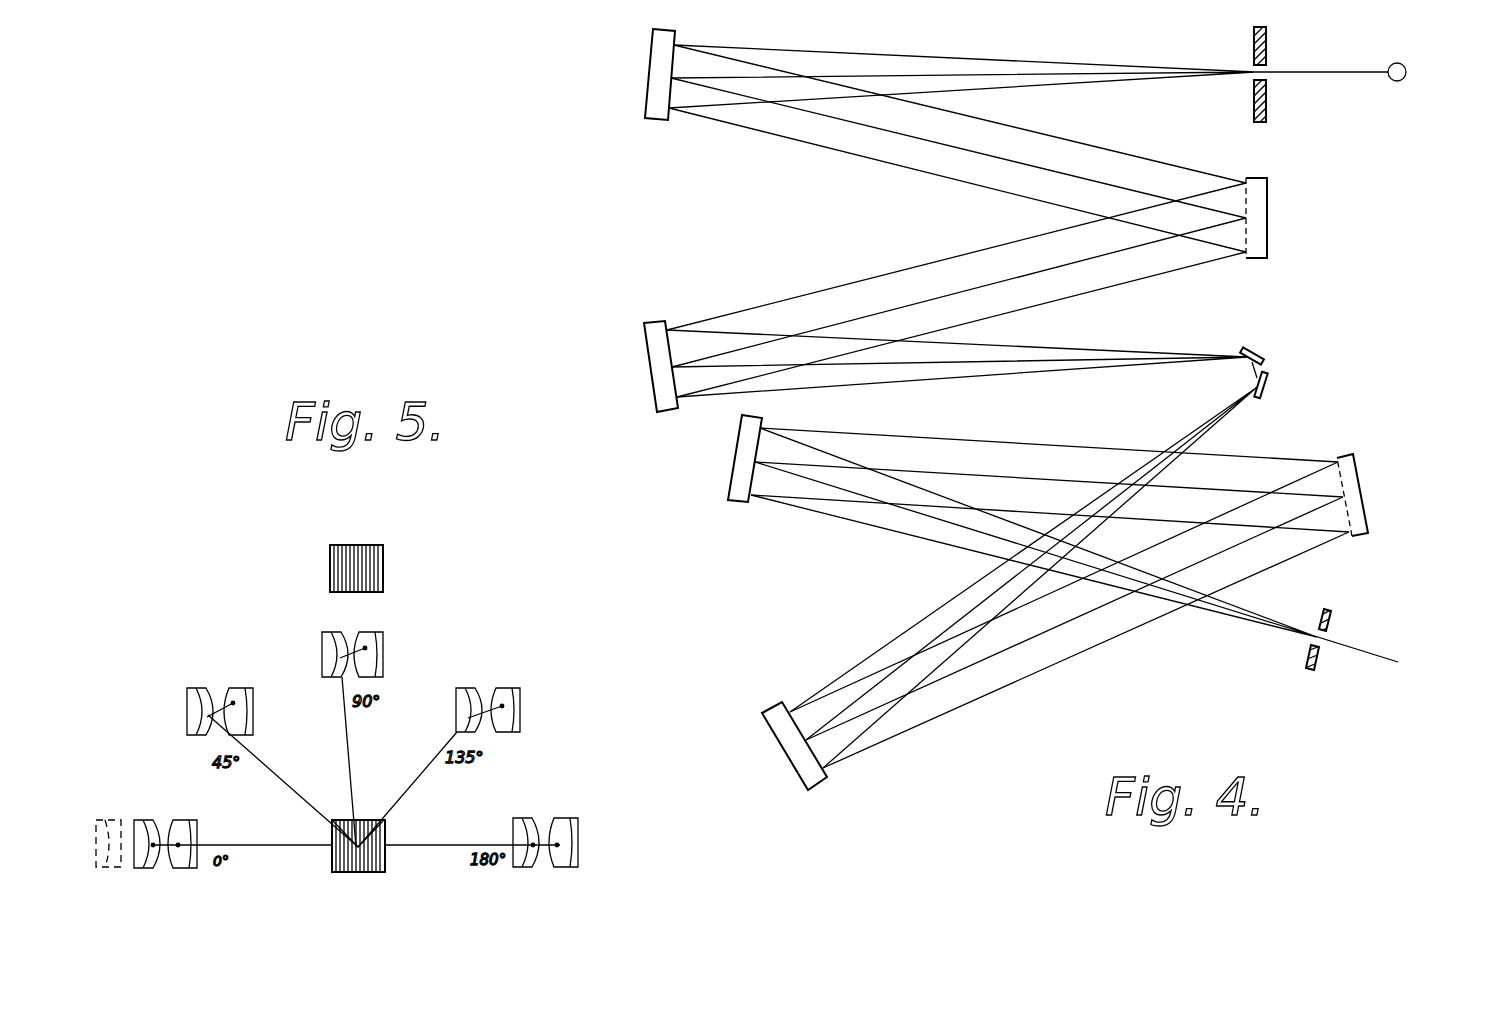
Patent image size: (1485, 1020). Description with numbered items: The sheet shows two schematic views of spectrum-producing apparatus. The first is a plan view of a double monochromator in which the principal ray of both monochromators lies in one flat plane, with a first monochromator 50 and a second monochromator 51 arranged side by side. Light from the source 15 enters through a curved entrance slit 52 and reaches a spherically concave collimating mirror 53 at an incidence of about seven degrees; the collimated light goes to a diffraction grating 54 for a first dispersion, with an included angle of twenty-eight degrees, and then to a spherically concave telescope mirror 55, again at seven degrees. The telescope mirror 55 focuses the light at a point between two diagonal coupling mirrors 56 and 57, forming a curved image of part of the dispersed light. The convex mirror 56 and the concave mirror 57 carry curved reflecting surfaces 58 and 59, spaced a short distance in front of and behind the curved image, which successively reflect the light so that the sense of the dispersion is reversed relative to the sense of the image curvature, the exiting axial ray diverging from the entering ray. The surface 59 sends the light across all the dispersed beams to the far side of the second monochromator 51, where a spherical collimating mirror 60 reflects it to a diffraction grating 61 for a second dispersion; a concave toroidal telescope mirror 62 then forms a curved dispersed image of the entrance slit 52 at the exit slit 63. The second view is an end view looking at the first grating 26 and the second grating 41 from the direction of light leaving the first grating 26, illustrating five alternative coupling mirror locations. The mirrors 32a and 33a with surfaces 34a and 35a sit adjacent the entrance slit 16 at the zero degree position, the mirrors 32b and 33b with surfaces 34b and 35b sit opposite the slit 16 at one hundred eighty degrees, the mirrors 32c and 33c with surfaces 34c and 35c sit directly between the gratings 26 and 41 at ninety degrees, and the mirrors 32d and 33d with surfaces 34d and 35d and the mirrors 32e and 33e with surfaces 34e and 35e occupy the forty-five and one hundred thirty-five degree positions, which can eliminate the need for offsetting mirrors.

In FIG. 4, the source 15 is at (1395, 81).
In FIG. 5, the entrance slit 16 is at (110, 818).
In FIG. 5, the first grating 26 is at (385, 860).
In FIG. 5, the second grating 41 is at (385, 560).
In FIG. 4, the first monochromator 50 is at (1290, 214).
In FIG. 4, the second monochromator 51 is at (1380, 510).
In FIG. 4, the curved entrance slit 52 is at (1268, 67).
In FIG. 4, the spherically concave collimating mirror 53 is at (650, 47).
In FIG. 4, the diffraction grating 54 is at (1259, 187).
In FIG. 4, the spherically concave telescope mirror 55 is at (650, 345).
In FIG. 4, the convex coupling mirror 56 is at (1265, 352).
In FIG. 4, the concave coupling mirror 57 is at (1272, 386).
In FIG. 4, the curved reflecting surface 58 is at (1247, 356).
In FIG. 4, the curved reflecting surface 59 is at (1265, 401).
In FIG. 4, the spherical collimating mirror 60 is at (800, 768).
In FIG. 4, the diffraction grating 61 is at (1363, 470).
In FIG. 4, the concave toroidal telescope mirror 62 is at (735, 476).
In FIG. 4, the exit slit 63 is at (1330, 632).
In FIG. 5, the coupling mirror 32a is at (141, 852).
In FIG. 5, the coupling mirror 32b is at (526, 849).
In FIG. 5, the coupling mirror 32c is at (314, 635).
In FIG. 5, the coupling mirror 32d is at (159, 689).
In FIG. 5, the coupling mirror 32e is at (444, 692).
In FIG. 5, the coupling mirror 33a is at (214, 850).
In FIG. 5, the coupling mirror 33b is at (601, 828).
In FIG. 5, the coupling mirror 33c is at (406, 634).
In FIG. 5, the coupling mirror 33d is at (257, 682).
In FIG. 5, the coupling mirror 33e is at (545, 687).
In FIG. 5, the reflecting surface 34a is at (148, 822).
In FIG. 5, the reflecting surface 34b is at (533, 868).
In FIG. 5, the reflecting surface 34c is at (336, 646).
In FIG. 5, the reflecting surface 34d is at (197, 690).
In FIG. 5, the reflecting surface 34e is at (440, 703).
In FIG. 5, the reflecting surface 35a is at (180, 825).
In FIG. 5, the reflecting surface 35b is at (565, 855).
In FIG. 5, the reflecting surface 35c is at (382, 640).
In FIG. 5, the reflecting surface 35d is at (250, 700).
In FIG. 5, the reflecting surface 35e is at (505, 690).